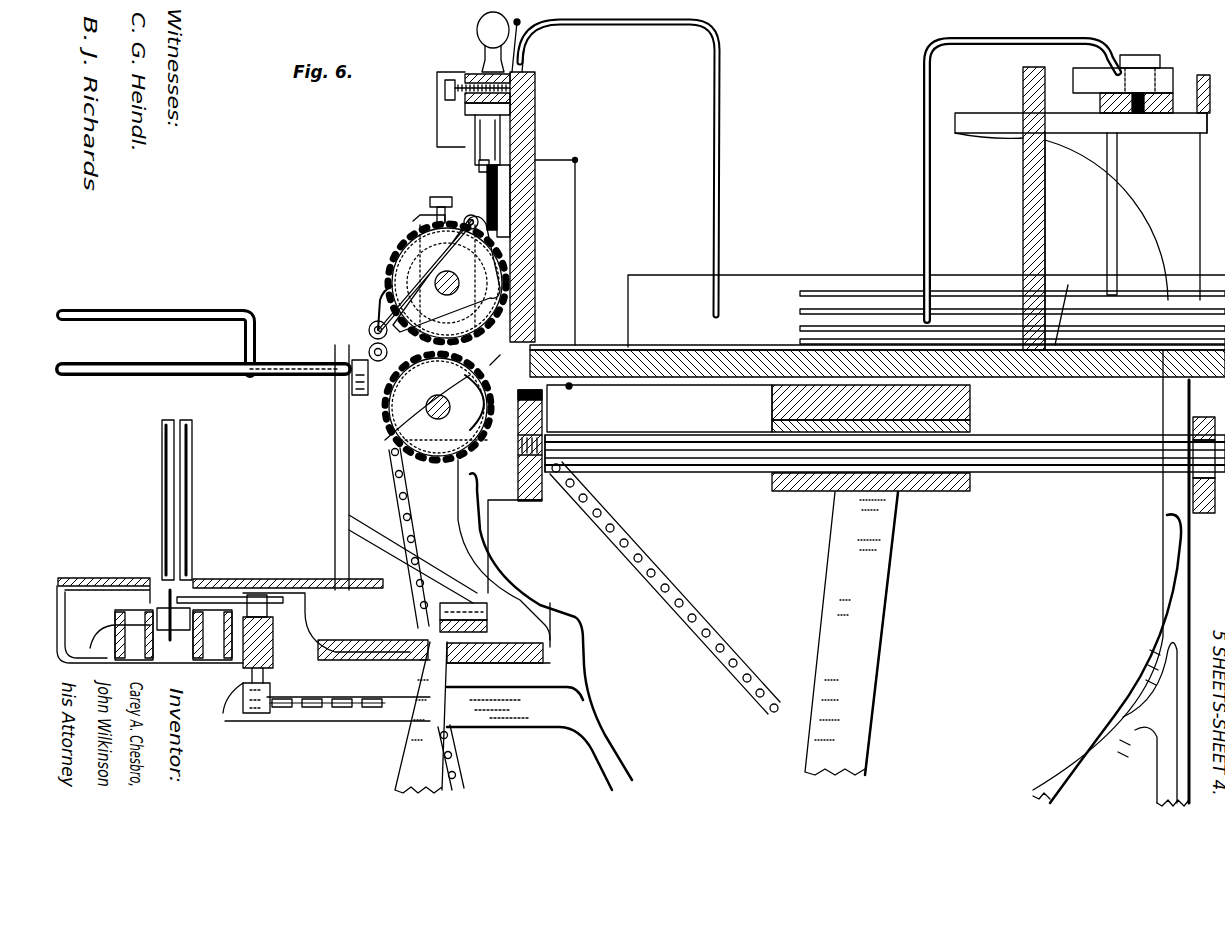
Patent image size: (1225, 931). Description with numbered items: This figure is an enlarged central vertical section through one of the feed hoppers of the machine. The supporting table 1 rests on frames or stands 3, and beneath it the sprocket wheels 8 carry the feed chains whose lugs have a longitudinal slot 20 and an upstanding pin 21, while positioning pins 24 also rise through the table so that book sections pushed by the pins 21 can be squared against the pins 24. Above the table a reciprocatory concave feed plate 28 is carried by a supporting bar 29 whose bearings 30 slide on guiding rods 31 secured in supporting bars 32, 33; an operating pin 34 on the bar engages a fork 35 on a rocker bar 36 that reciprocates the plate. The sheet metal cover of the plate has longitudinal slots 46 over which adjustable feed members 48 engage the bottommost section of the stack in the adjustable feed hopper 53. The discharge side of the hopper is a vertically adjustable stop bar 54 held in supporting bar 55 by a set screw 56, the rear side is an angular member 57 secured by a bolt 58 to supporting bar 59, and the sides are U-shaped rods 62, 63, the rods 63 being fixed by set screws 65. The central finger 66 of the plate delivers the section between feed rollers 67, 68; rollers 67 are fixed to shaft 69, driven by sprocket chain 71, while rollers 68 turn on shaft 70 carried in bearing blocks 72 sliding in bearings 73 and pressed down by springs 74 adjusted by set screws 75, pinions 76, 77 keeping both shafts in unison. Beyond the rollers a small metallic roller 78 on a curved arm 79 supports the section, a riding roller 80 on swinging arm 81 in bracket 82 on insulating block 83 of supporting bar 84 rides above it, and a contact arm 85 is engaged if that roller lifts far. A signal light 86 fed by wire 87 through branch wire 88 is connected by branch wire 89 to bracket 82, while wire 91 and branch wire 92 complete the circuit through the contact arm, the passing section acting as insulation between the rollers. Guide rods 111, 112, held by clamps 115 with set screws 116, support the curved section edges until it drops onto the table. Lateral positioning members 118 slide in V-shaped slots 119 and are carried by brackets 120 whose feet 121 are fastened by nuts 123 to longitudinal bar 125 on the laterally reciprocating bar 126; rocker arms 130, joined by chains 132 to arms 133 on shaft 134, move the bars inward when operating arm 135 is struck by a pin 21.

The supporting table 1 is at (78, 578).
The frame or stand 3 is at (585, 680).
The sprocket wheel 8 is at (195, 640).
The longitudinal slot 20 is at (563, 348).
The upstanding pin 21 is at (192, 502).
The upstanding pin 24 is at (162, 498).
The reciprocatory concave feed plate 28 is at (1073, 378).
The supporting bar 29 is at (970, 396).
The bearing 30 is at (955, 492).
The guiding and supporting rod 31 is at (750, 448).
The supporting bar 32 is at (535, 501).
The supporting bar 33 is at (1193, 490).
The operating pin 34 is at (770, 392).
The fork 35 is at (770, 408).
The rocker bar 36 is at (870, 592).
The longitudinal slot 46 is at (846, 340).
The feed member 48 is at (1067, 300).
The adjustable feed hopper 53 is at (801, 208).
The stop bar 54 is at (500, 202).
The supporting bar 55 is at (468, 108).
The set screw 56 is at (445, 90).
The angular member 57 is at (1021, 213).
The bolt 58 is at (1140, 82).
The supporting bar 59 is at (1140, 95).
The U-shaped rod 62 is at (720, 128).
The U-shaped rod 63 is at (922, 108).
The set screw 65 is at (1185, 103).
The central finger 66 is at (598, 352).
The feed roller 67 is at (505, 350).
The feed roller 68 is at (487, 270).
The shaft 69 is at (400, 438).
The shaft 70 is at (400, 300).
The sprocket chain 71 is at (605, 498).
The bearing block 72 is at (400, 245).
The bearing 73 is at (392, 265).
The spring 74 is at (405, 225).
The set screw 75 is at (437, 200).
The pinion 76 is at (395, 300).
The pinion 77 is at (432, 470).
The supporting metallic roller 78 is at (366, 372).
The curved supporting arm 79 is at (425, 412).
The riding roller 80 is at (368, 328).
The upwardly swinging arm 81 is at (500, 282).
The bracket 82 is at (505, 240).
The block of insulating material 83 is at (497, 222).
The supporting bar 84 is at (500, 184).
The contact arm 85 is at (360, 296).
The electric signal light 86 is at (478, 33).
The electric feed wire 87 is at (520, 25).
The branch wire 88 is at (530, 63).
The branch wire 89 is at (443, 74).
The wire 91 is at (572, 387).
The branch wire 92 is at (577, 268).
The guide rod 111 is at (180, 312).
The guide rod 112 is at (180, 378).
The clamp 115 is at (545, 417).
The set screw 116 is at (885, 452).
The lateral positioning member 118 is at (334, 488).
The V-shaped slot 119 is at (300, 578).
The bracket 120 is at (450, 558).
The foot 121 is at (445, 603).
The nut 123 is at (445, 628).
The longitudinal bar 125 is at (487, 636).
The laterally reciprocating bar 126 is at (370, 640).
The rocker arm 130 is at (412, 755).
The chain 132 is at (338, 712).
The arm 133 is at (272, 699).
The shaft 134 is at (248, 712).
The operating arm 135 is at (195, 600).